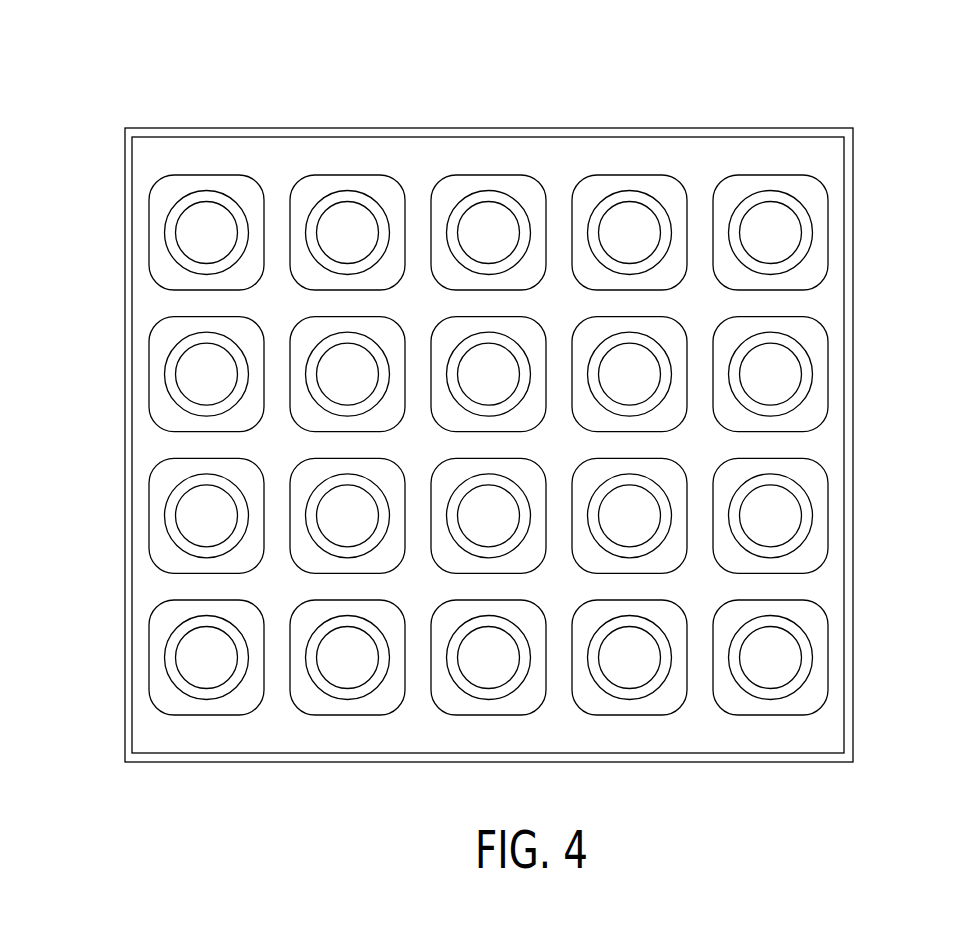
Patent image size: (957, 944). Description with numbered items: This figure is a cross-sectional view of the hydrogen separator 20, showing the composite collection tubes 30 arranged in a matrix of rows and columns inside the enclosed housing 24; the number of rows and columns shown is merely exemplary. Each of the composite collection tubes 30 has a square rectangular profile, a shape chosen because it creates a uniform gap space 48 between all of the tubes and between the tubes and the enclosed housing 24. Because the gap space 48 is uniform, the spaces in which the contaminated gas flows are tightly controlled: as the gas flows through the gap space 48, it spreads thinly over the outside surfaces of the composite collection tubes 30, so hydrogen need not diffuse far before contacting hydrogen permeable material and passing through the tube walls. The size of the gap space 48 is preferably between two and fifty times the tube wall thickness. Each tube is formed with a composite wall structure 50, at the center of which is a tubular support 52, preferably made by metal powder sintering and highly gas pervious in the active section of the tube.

The hydrogen separator 20 is at (243, 85).
The enclosed housing 24 is at (717, 128).
The composite collection tubes 30 is at (532, 175).
The gap space 48 is at (698, 215).
The composite wall structure 50 is at (367, 186).
The tubular support 52 is at (338, 195).